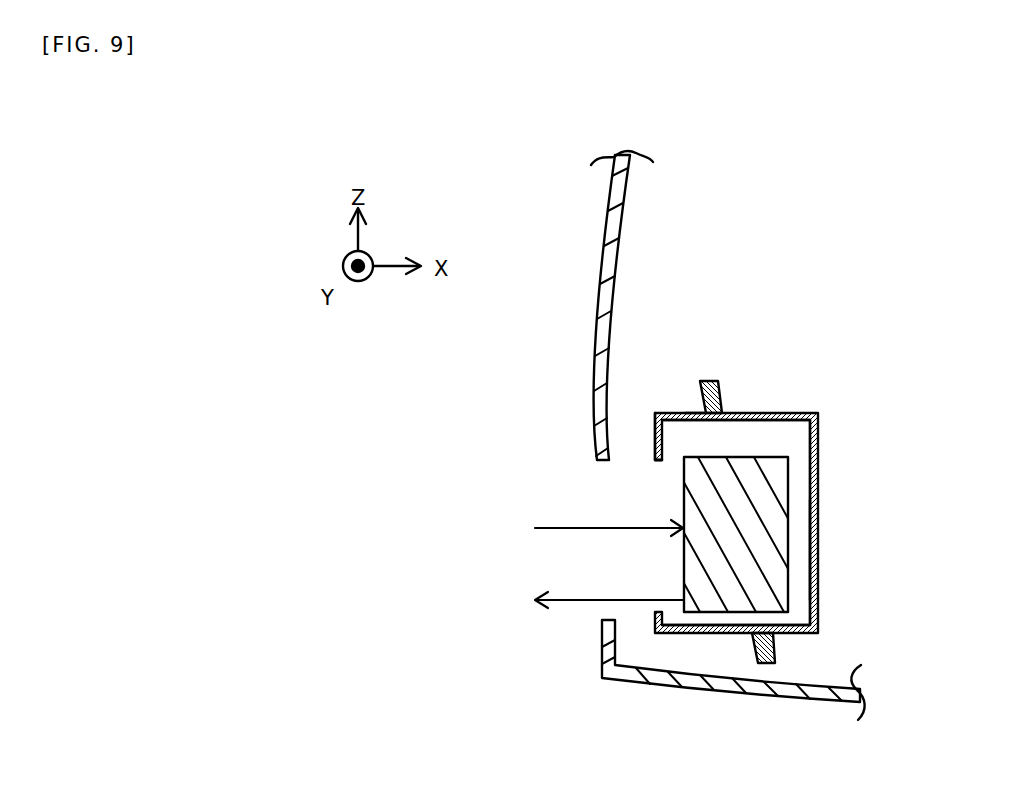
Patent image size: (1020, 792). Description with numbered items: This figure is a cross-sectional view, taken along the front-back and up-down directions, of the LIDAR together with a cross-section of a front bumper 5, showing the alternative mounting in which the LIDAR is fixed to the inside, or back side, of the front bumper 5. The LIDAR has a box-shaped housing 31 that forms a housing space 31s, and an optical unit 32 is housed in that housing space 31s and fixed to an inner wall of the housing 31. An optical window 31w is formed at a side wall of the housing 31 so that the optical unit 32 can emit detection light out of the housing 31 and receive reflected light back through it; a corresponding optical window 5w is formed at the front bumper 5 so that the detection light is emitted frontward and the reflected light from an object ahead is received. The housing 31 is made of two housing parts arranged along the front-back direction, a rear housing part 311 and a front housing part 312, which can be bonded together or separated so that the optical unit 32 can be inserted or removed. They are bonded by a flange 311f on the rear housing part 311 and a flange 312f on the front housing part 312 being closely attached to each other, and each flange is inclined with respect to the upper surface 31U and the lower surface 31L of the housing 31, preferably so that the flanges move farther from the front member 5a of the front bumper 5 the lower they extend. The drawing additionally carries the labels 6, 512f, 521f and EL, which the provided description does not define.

The front bumper 5 is at (568, 262).
The front member 5a is at (601, 336).
The optical window 5w is at (609, 497).
The sensor unit 6 is at (460, 423).
The housing 31 is at (813, 593).
The rear housing part 311 is at (656, 432).
The flange 311f is at (694, 412).
The upper surface 31U is at (699, 412).
The lower surface 31L is at (702, 634).
The front housing part 312 is at (800, 413).
The flange 312f is at (721, 393).
The housing space 31s is at (795, 547).
The optical window 31w is at (658, 498).
The optical unit 32 is at (790, 493).
The lower fixing tab 512f is at (767, 660).
The frame fixing portion 521f is at (760, 660).
The emitted light EL is at (573, 604).